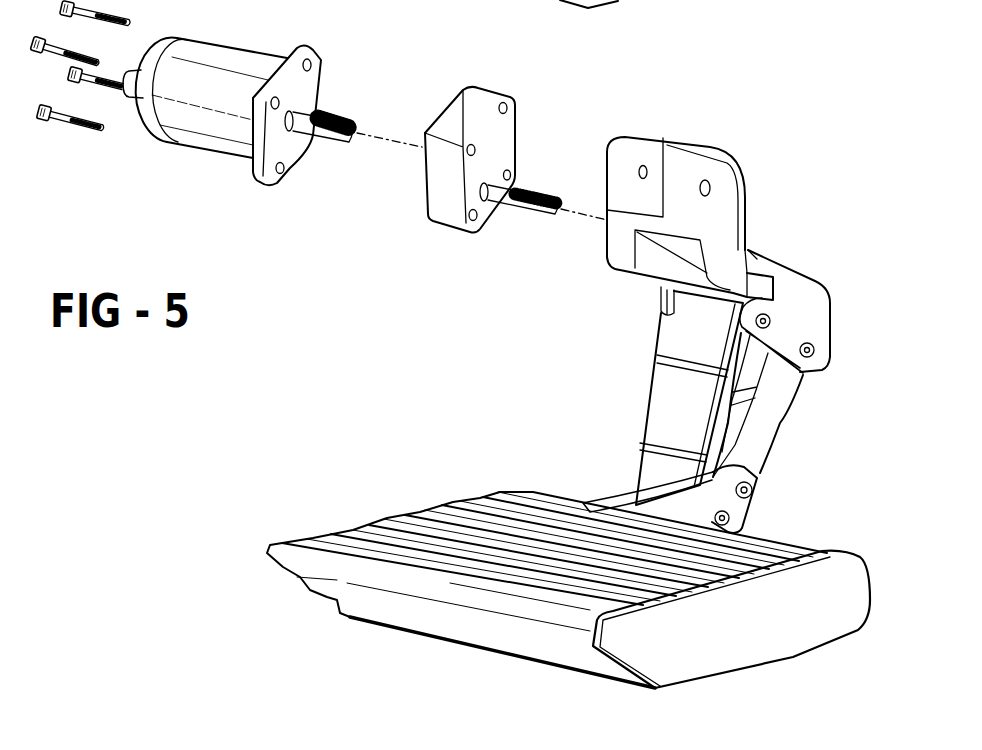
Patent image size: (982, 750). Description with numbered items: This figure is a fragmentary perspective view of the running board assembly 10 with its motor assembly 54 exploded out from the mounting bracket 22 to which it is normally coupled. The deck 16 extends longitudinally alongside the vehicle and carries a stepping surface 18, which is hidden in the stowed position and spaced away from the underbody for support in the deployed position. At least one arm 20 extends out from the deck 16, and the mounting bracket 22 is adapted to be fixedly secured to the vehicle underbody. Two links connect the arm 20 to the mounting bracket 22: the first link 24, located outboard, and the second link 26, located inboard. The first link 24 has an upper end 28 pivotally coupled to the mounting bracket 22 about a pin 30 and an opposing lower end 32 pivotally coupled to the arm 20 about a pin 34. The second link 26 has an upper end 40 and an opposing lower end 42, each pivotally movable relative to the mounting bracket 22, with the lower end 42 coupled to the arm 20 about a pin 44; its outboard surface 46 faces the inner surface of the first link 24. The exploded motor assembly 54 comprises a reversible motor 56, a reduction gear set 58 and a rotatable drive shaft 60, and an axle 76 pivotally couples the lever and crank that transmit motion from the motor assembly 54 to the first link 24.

The running board assembly 10 is at (252, 557).
The deck 16 is at (866, 555).
The stepping surface 18 is at (455, 533).
The arm 20 is at (593, 483).
The mounting bracket 22 is at (735, 162).
The first link 24 is at (643, 405).
The second link 26 is at (772, 448).
The upper end 28 is at (660, 287).
The pin 30 is at (770, 314).
The lower end 32 is at (623, 487).
The pin 34 is at (730, 519).
The upper end 40 is at (813, 380).
The lower end 42 is at (750, 468).
The pin 44 is at (753, 490).
The outboard surface 46 is at (752, 372).
The motor assembly 54 is at (291, 190).
The reversible motor 56 is at (227, 48).
The reduction gear set 58 is at (452, 101).
The drive shaft 60 is at (539, 188).
The axle 76 is at (815, 350).